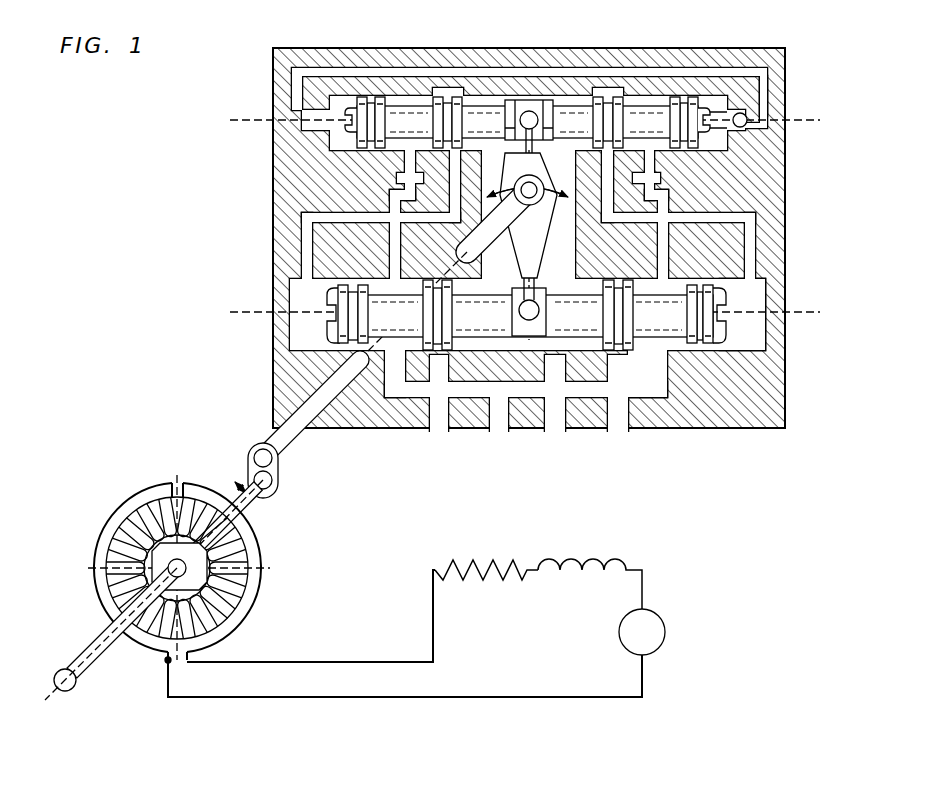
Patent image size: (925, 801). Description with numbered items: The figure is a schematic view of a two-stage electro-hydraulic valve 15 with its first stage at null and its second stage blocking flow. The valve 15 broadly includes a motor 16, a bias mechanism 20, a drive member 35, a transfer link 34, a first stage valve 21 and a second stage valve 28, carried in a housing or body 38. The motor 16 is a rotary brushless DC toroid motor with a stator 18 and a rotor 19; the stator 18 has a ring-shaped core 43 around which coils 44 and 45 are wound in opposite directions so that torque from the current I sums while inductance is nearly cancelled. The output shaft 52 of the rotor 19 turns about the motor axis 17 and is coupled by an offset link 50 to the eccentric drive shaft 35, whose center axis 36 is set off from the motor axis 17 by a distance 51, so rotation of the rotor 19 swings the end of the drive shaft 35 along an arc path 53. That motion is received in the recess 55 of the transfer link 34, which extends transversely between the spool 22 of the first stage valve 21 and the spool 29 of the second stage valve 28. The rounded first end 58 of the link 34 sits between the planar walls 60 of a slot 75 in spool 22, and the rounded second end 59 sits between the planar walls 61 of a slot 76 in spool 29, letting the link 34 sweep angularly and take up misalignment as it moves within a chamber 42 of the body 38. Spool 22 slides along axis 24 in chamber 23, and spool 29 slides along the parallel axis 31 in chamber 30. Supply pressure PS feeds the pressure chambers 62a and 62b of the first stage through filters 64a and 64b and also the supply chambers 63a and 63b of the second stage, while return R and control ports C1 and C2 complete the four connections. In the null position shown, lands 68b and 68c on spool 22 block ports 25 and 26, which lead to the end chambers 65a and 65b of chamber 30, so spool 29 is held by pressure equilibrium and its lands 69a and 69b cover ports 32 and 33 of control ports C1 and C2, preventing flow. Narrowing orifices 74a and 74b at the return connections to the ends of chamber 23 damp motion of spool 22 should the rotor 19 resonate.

The two-stage electro-hydraulic valve 15 is at (158, 176).
The motor 16 is at (82, 492).
The motor axis 17 is at (262, 502).
The stator 18 is at (96, 612).
The rotor 19 is at (158, 562).
The bias mechanism 20 is at (108, 668).
The first stage valve 21 is at (762, 93).
The spool 22 is at (658, 106).
The chamber 23 is at (722, 142).
The axis 24 is at (295, 118).
The port 25 is at (445, 157).
The port 26 is at (614, 155).
The second stage valve 28 is at (773, 279).
The spool 29 is at (682, 332).
The chamber 30 is at (755, 318).
The axis 31 is at (252, 311).
The port 32 is at (430, 368).
The port 33 is at (620, 372).
The transfer link 34 is at (512, 215).
The drive member 35 is at (300, 440).
The center axis 36 is at (277, 426).
The housing 38 is at (268, 224).
The chamber 42 is at (528, 215).
The core 43 is at (242, 561).
The coil 44 is at (150, 492).
The coil 45 is at (256, 600).
The offset link 50 is at (282, 478).
The offset distance 51 is at (238, 482).
The output shaft 52 is at (250, 512).
The arc path 53 is at (541, 186).
The recess 55 is at (530, 172).
The first end 58 is at (546, 128).
The second end 59 is at (542, 318).
The parallel planar walls 60 is at (508, 108).
The parallel planar walls 61 is at (523, 322).
The pressure chamber 62a is at (416, 104).
The pressure chamber 62b is at (690, 106).
The supply chamber 63a is at (392, 293).
The supply chamber 63b is at (680, 290).
The filter 64a is at (398, 179).
The filter 64b is at (660, 178).
The end chamber 65a is at (319, 315).
The end chamber 65b is at (736, 315).
The land 68b is at (456, 104).
The land 68c is at (612, 104).
The spool land 69a is at (424, 279).
The spool land 69b is at (622, 277).
The narrowing orifice 74a is at (340, 123).
The narrowing orifice 74b is at (741, 112).
The slot 75 is at (534, 120).
The slot 76 is at (537, 299).
The control port C1 is at (438, 430).
The control port C2 is at (618, 430).
The supply pressure PS is at (498, 430).
The fluid return R is at (556, 430).
The current source I is at (666, 632).